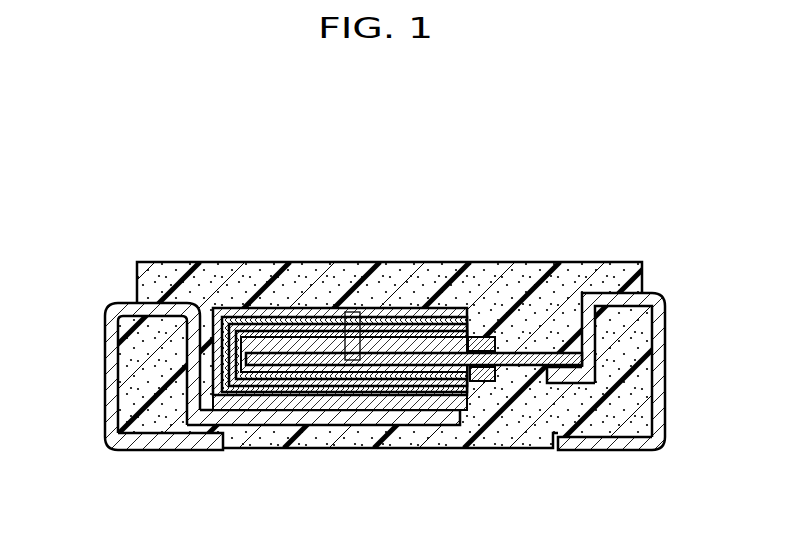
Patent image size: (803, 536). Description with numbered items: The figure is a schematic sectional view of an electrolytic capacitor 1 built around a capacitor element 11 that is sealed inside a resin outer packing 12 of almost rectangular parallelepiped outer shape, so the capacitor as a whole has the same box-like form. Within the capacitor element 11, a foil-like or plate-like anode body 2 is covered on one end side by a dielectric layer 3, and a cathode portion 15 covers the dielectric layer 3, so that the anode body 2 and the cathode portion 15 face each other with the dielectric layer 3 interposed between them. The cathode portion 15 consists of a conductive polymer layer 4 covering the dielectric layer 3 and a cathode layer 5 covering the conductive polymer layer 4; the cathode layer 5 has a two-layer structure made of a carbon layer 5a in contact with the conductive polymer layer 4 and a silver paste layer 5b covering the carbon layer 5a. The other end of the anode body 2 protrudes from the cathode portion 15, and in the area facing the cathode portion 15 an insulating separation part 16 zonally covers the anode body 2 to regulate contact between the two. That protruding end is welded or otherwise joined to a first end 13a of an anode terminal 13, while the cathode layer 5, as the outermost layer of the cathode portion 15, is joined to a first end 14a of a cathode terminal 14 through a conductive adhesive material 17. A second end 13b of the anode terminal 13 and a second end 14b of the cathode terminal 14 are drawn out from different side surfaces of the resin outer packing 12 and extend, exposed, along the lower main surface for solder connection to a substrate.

The electrolytic capacitor 1 is at (401, 295).
The anode body 2 is at (527, 352).
The dielectric layer 3 is at (390, 340).
The conductive polymer layer 4 is at (343, 334).
The cathode layer 5 is at (340, 285).
The carbon layer 5a is at (318, 220).
The silver paste layer 5b is at (328, 322).
The capacitor element 11 is at (397, 294).
The resin outer packing 12 is at (283, 438).
The anode terminal 13 is at (622, 399).
The first end of anode terminal 13a is at (546, 370).
The second end of anode terminal 13b is at (587, 442).
The cathode terminal 14 is at (252, 403).
The first end of cathode terminal 14a is at (383, 418).
The second end of cathode terminal 14b is at (193, 440).
The cathode portion 15 is at (340, 264).
The separation part 16 is at (487, 382).
The conductive adhesive material 17 is at (343, 412).